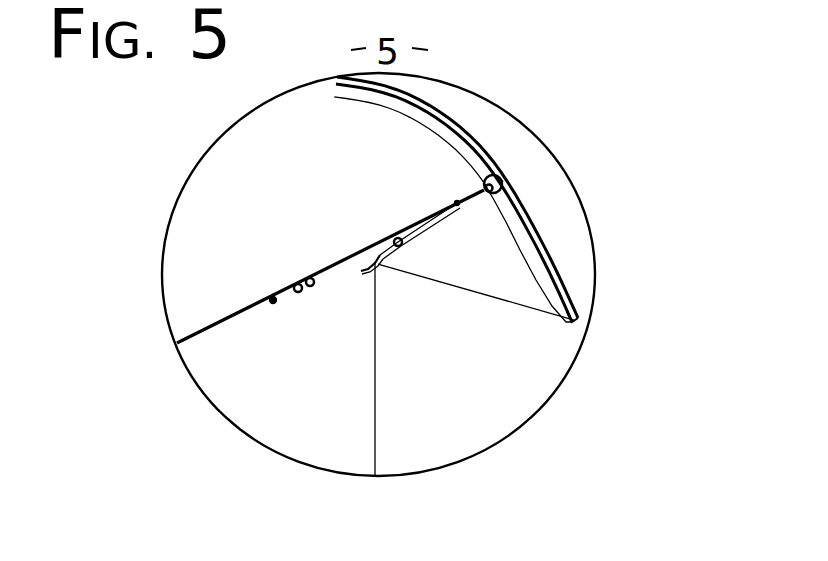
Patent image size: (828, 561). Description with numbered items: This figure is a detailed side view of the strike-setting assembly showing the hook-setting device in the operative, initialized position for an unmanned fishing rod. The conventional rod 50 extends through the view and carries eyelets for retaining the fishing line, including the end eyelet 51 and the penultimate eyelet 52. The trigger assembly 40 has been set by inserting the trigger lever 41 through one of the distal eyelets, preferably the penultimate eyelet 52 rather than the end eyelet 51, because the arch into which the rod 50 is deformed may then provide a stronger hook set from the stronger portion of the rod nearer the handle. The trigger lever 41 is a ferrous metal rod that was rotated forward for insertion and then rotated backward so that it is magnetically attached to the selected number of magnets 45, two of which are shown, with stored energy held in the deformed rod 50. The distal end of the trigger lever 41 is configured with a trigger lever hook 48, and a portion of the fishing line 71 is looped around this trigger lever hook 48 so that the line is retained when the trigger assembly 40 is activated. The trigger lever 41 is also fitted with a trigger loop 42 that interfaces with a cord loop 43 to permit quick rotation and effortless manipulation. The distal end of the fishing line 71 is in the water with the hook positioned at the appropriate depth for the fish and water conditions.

The trigger assembly 40 is at (460, 310).
The trigger lever 41 is at (432, 215).
The trigger loop 42 is at (484, 191).
The cord loop 43 is at (457, 203).
The magnets 45 is at (400, 238).
The trigger lever hook 48 is at (357, 262).
The rod 50 is at (375, 89).
The end eyelet 51 is at (570, 322).
The penultimate eyelet 52 is at (500, 180).
The fishing line 71 is at (402, 273).